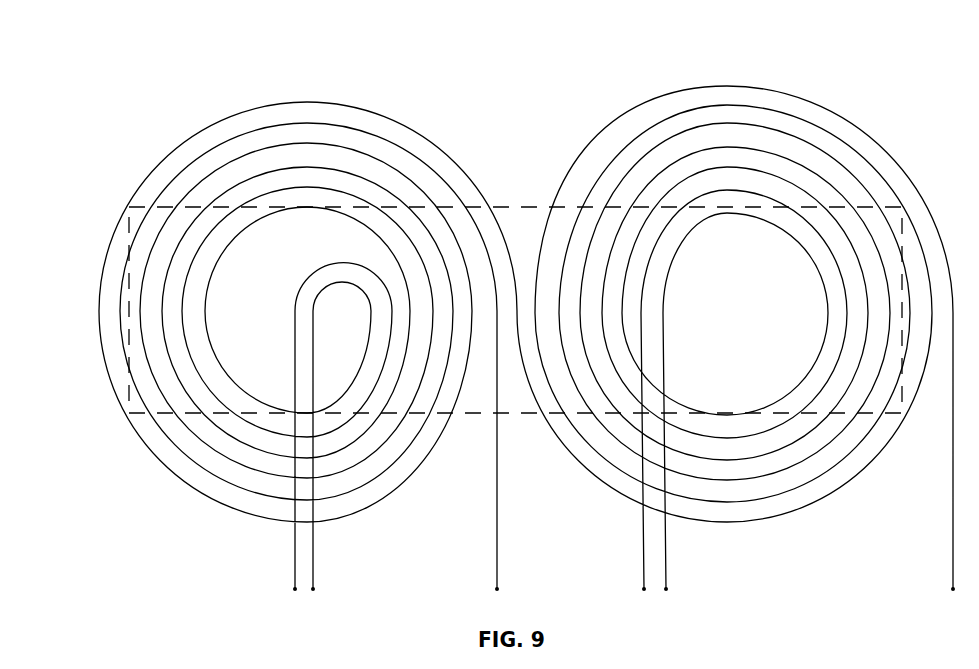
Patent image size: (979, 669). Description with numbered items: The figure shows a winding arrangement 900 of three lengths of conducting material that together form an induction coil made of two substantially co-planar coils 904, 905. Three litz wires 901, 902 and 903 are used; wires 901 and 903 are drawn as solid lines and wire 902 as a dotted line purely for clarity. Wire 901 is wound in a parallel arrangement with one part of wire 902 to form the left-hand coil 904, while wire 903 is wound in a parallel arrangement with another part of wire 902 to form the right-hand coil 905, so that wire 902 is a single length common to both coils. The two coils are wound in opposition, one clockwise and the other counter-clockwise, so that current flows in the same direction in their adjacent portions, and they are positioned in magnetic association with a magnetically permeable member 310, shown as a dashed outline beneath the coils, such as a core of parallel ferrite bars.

The winding arrangement 900 is at (97, 64).
The litz wire 901 is at (499, 489).
The litz wire 902 is at (293, 346).
The litz wire 903 is at (736, 338).
The coil 904 is at (272, 297).
The coil 905 is at (755, 311).
The magnetically permeable member 310 is at (903, 418).